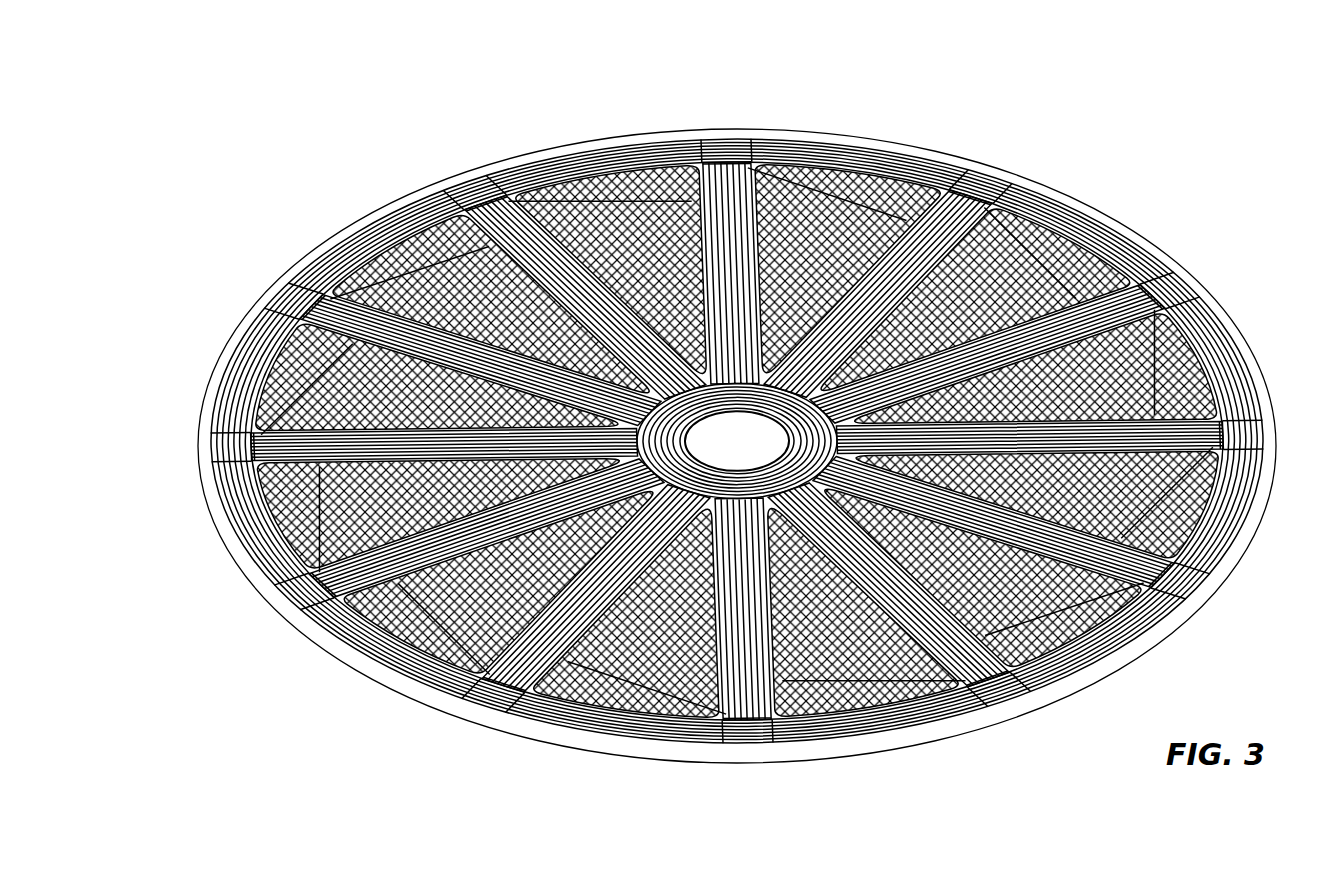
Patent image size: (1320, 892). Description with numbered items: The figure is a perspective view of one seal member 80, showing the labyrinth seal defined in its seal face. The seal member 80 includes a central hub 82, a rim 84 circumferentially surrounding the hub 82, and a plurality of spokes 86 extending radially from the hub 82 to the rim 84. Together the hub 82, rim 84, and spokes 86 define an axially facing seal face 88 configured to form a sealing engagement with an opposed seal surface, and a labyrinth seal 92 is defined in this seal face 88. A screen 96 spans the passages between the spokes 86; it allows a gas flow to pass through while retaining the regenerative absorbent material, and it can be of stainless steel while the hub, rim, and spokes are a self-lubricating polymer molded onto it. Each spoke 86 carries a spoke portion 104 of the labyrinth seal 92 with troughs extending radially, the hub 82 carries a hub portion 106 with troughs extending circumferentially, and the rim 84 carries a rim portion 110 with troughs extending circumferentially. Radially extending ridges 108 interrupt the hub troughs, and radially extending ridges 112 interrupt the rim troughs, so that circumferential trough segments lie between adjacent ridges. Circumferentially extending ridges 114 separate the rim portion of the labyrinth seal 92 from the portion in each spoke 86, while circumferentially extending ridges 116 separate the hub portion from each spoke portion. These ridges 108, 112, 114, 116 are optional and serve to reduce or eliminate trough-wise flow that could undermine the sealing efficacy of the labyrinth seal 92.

The seal member 80 is at (443, 98).
The hub 82 is at (745, 415).
The rim 84 is at (196, 447).
The spokes 86 is at (775, 645).
The seal face 88 is at (737, 452).
The labyrinth seal 92 is at (838, 128).
The screen 96 is at (1012, 268).
The spoke portion 104 is at (897, 268).
The hub portion 106 is at (707, 472).
The radially extending ridges 108 is at (790, 385).
The rim portion 110 is at (616, 706).
The radially extending ridges 112 is at (1010, 692).
The circumferentially extending ridges 114 is at (935, 700).
The circumferentially extending ridges 116 is at (758, 482).